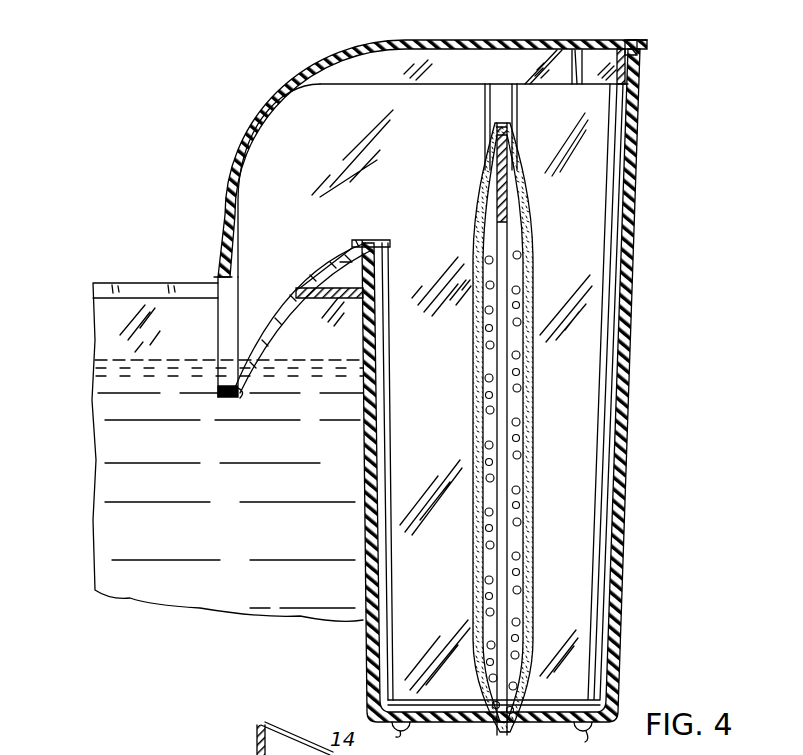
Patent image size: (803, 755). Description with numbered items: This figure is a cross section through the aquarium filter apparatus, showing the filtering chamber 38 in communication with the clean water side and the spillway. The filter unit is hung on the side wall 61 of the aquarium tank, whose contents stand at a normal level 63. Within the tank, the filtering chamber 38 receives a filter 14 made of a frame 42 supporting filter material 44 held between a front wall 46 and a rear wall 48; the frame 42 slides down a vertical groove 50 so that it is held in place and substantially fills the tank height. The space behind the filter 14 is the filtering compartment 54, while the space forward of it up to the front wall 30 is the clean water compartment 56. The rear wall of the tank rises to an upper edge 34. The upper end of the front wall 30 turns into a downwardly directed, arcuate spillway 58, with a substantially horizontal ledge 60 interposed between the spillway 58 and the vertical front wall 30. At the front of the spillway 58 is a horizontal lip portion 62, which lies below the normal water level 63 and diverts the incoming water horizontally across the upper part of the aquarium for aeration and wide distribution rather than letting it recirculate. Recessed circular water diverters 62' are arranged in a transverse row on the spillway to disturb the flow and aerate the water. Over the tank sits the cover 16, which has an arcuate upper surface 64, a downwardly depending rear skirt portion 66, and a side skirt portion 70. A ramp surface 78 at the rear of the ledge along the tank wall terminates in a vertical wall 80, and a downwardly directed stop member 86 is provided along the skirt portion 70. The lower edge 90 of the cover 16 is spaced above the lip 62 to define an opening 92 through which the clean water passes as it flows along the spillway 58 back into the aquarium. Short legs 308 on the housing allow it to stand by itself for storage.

The cover member 16 is at (285, 62).
The side skirt portion 70 is at (366, 58).
The arcuate upper surface 64 is at (418, 44).
The ramp surface 78 is at (540, 70).
The vertical wall 80 is at (576, 50).
The stop member 86 is at (592, 46).
The rear skirt portion 66 is at (630, 48).
The upper edge 34 is at (645, 46).
The vertical groove 50 is at (502, 110).
The frame 42 is at (506, 146).
The filtering compartment 54 is at (600, 183).
The filtering chamber 38 is at (578, 325).
The filter 14 is at (462, 260).
The water diverters 62' is at (266, 309).
The side wall of the aquarium tank 61 is at (312, 262).
The horizontal ledge 60 is at (352, 255).
The clean water compartment 56 is at (400, 298).
The spillway 58 is at (277, 308).
The front wall 30 is at (372, 370).
The lower edge 90 is at (222, 289).
The opening 92 is at (226, 320).
The lip portion 62 is at (219, 408).
The normal level of water 63 is at (130, 358).
The front wall of filter 46 is at (474, 598).
The filter material 44 is at (514, 597).
The rear wall of filter 48 is at (524, 582).
The short legs 308 is at (404, 733).